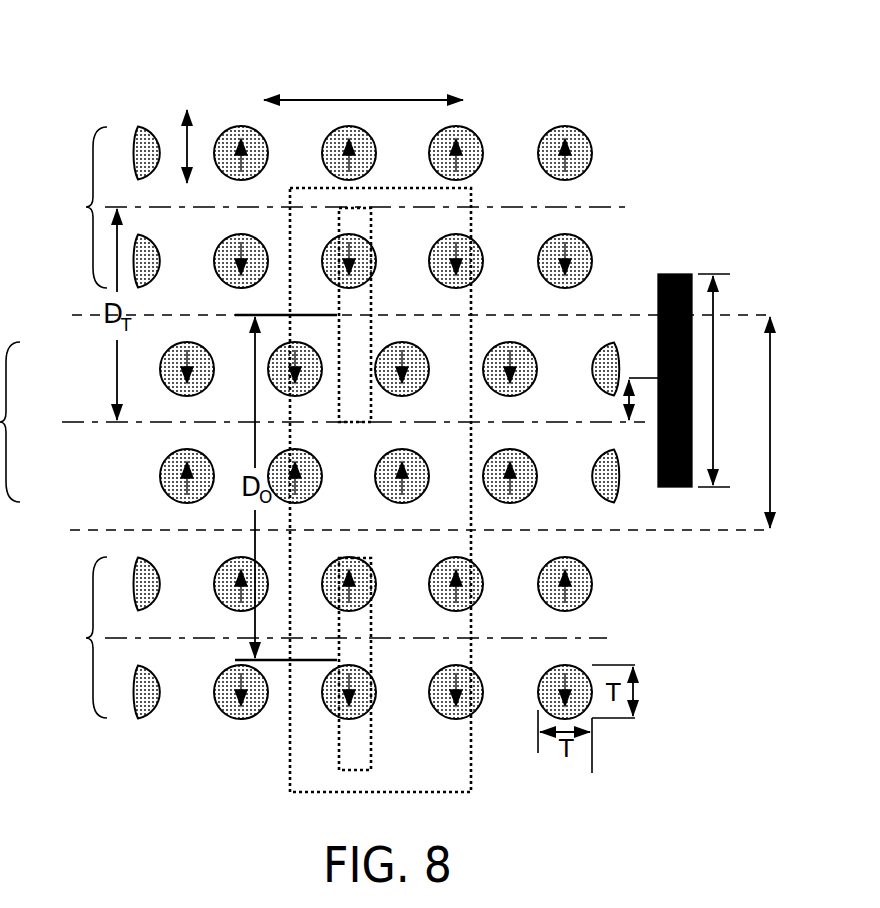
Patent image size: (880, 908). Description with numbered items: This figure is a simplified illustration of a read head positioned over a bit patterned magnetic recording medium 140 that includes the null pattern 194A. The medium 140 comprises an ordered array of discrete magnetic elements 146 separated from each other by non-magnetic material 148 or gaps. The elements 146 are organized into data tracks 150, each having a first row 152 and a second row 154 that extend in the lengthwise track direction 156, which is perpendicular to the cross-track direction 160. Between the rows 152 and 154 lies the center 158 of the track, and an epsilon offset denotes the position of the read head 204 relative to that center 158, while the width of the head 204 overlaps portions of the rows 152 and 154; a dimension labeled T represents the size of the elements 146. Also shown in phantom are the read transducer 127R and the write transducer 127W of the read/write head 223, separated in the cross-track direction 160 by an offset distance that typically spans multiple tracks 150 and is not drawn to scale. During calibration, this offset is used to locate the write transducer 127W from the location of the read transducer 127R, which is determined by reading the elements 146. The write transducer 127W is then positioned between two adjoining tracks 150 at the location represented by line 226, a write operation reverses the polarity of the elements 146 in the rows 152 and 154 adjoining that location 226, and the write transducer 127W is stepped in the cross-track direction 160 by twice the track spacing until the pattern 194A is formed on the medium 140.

The magnetic recording medium 140 is at (178, 82).
The discrete magnetic elements 146 is at (564, 126).
The non-magnetic material 148 is at (503, 190).
The data tracks 150 is at (53, 422).
The first row 152 is at (372, 342).
The second row 154 is at (612, 262).
The track direction 156 is at (380, 100).
The center of the track 158 is at (606, 207).
The cross-track direction 160 is at (186, 112).
The null pattern 194A is at (674, 88).
The read head 204 is at (672, 488).
The read/write head 223 is at (474, 791).
The line 226 is at (81, 313).
The read transducer 127R is at (373, 760).
The write transducer 127W is at (373, 330).